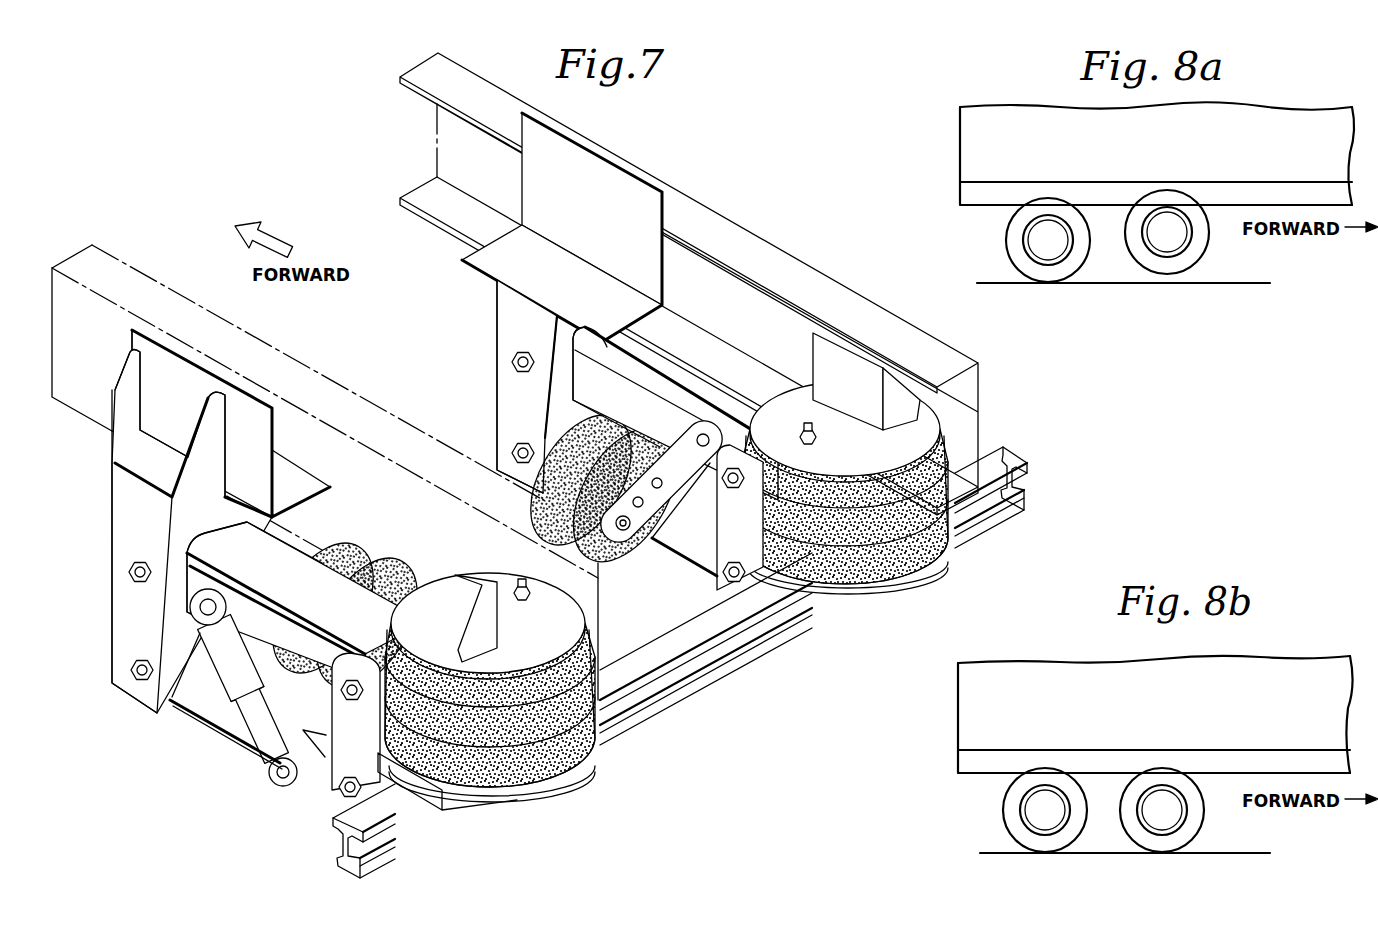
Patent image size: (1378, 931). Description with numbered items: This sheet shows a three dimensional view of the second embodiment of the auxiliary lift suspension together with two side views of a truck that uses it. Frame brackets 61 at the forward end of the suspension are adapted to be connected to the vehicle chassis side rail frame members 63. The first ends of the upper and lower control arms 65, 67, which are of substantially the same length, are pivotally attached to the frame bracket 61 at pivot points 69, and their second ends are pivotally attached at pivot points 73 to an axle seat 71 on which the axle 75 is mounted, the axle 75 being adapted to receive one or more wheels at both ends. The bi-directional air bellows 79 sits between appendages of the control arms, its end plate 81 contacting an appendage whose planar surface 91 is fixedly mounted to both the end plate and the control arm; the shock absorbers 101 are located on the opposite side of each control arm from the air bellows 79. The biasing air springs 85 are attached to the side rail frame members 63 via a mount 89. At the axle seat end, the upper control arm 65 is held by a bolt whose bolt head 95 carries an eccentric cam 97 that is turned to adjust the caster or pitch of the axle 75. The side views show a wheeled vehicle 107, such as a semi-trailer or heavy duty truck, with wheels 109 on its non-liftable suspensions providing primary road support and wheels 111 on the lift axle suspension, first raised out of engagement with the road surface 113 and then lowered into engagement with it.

In FIG. 7, the frame bracket 61 is at (548, 212).
In FIG. 7, the vehicle chassis side rail frame member 63 is at (447, 157).
In FIG. 7, the upper control arm 65 is at (278, 565).
In FIG. 7, the lower control arm 67 is at (228, 720).
In FIG. 7, the pivot points 69 is at (135, 662).
In FIG. 7, the axle seat 71 is at (473, 803).
In FIG. 7, the pivot points 73 is at (337, 795).
In FIG. 7, the axle 75 is at (712, 666).
In FIG. 7, the air bellows 79 is at (372, 560).
In FIG. 7, the end plate 81 is at (665, 456).
In FIG. 7, the biasing air spring 85 is at (588, 747).
In FIG. 7, the mount 89 is at (831, 386).
In FIG. 7, the planar surface 91 is at (657, 498).
In FIG. 7, the bolt head 95 is at (352, 703).
In FIG. 7, the eccentric cam 97 is at (330, 690).
In FIG. 7, the shock absorber 101 is at (232, 675).
In FIG. 8A, the wheeled vehicle 107 is at (1259, 156).
In FIG. 8B, the wheeled vehicle 107 is at (1265, 727).
In FIG. 8A, the wheels 109 is at (1008, 254).
In FIG. 8B, the wheels 109 is at (1004, 826).
In FIG. 8A, the wheels 111 is at (1198, 252).
In FIG. 8B, the wheels 111 is at (1197, 825).
In FIG. 8A, the road surface 113 is at (1272, 286).
In FIG. 8B, the road surface 113 is at (1272, 856).